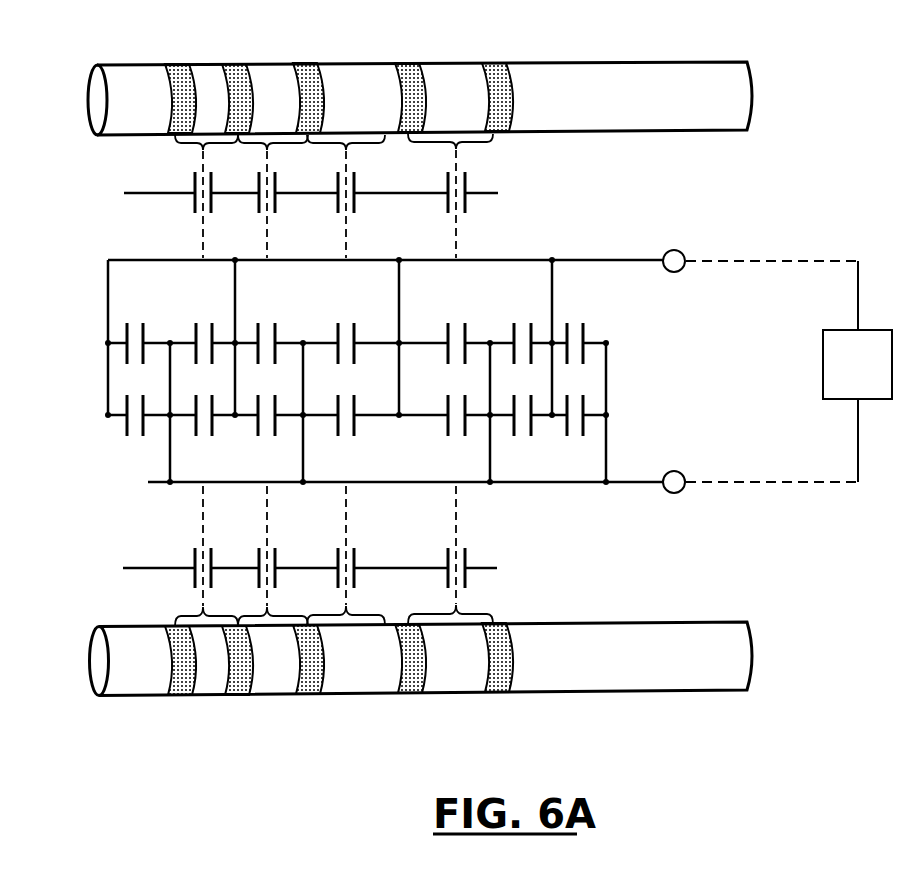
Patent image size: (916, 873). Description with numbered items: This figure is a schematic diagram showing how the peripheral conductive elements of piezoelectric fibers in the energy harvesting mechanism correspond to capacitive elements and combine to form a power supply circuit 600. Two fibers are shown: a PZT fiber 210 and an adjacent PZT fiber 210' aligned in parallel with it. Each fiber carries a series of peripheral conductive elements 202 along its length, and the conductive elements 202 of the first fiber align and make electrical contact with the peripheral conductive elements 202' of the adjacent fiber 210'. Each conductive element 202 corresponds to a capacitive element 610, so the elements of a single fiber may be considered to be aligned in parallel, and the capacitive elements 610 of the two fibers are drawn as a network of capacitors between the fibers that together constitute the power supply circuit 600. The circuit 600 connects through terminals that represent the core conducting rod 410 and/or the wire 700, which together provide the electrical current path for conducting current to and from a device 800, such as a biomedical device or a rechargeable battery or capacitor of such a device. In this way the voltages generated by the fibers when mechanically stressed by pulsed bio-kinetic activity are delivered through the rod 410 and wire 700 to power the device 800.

The peripheral conductive element 202 is at (353, 395).
The peripheral conductive element of adjacent fiber 202' is at (514, 681).
The PZT fiber 210 is at (448, 400).
The adjacent PZT fiber 210' is at (440, 679).
The core conducting rod 410 is at (626, 258).
The wire 700 is at (621, 487).
The power supply circuit 600 is at (688, 263).
The capacitive element 610 is at (405, 63).
The device 800 is at (857, 371).